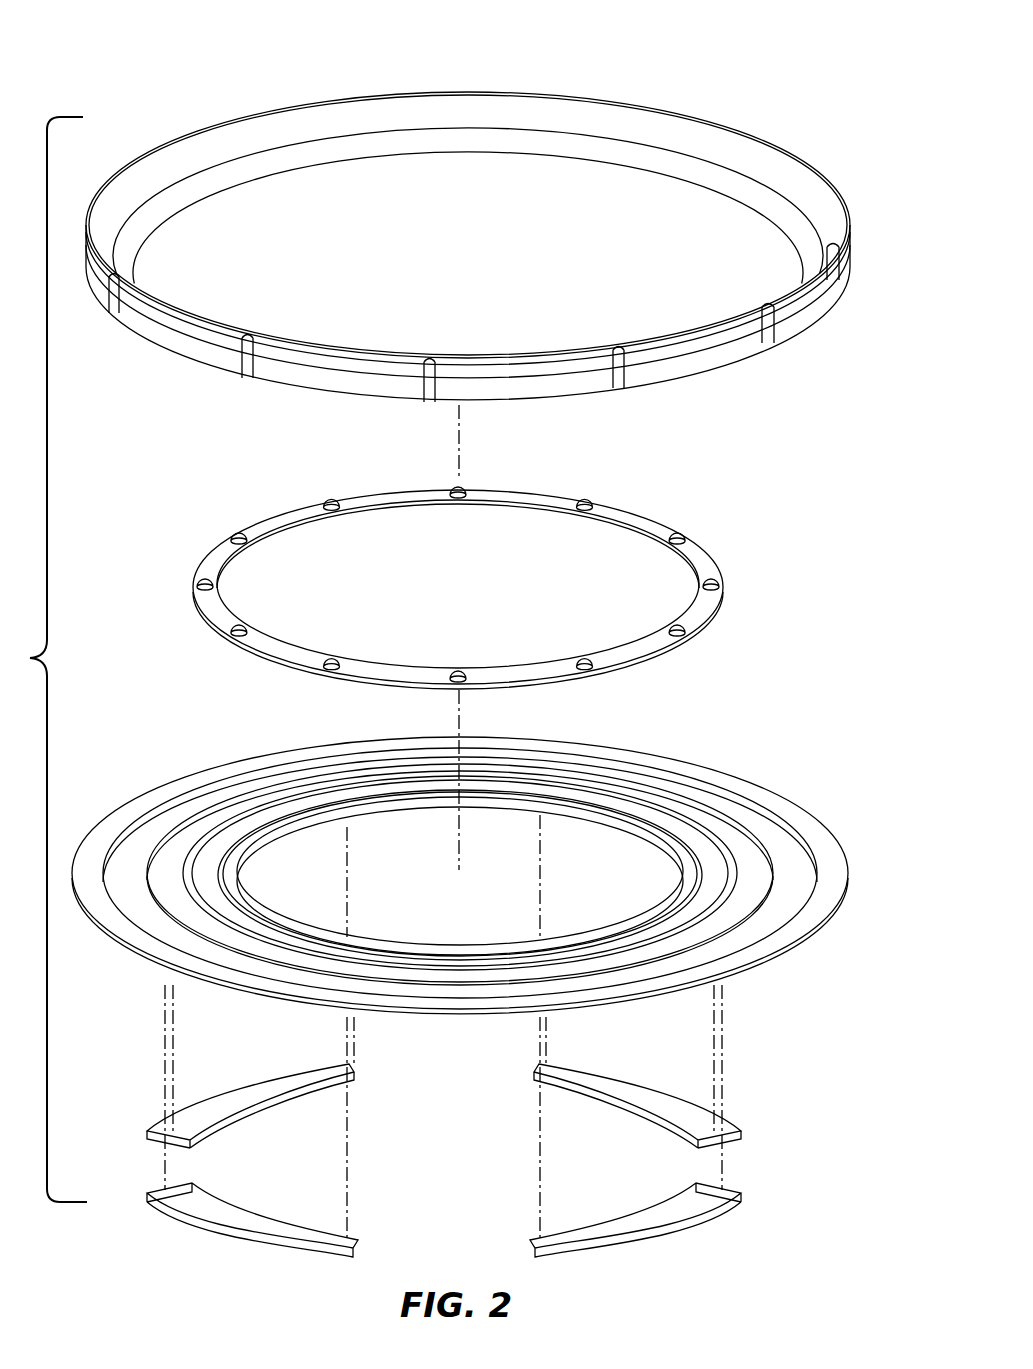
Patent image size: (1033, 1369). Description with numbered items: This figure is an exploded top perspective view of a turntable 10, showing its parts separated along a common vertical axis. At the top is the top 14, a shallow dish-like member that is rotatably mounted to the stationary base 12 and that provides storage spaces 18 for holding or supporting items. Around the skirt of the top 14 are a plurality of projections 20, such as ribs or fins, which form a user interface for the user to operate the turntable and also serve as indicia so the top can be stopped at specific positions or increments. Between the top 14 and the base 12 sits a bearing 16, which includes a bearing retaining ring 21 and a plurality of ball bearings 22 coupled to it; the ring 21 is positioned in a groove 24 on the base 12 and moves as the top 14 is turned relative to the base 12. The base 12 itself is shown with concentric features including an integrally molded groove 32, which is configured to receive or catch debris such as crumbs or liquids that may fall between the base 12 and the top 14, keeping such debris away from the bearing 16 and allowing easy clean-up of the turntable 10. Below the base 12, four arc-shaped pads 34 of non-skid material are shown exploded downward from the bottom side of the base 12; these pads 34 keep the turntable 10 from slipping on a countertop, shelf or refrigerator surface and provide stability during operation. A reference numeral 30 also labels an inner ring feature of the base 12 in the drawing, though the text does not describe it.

The turntable 10 is at (204, 54).
The stationary base 12 is at (460, 875).
The top 14 is at (392, 92).
The bearing 16 is at (490, 582).
The storage spaces 18 is at (583, 168).
The projections 20 is at (121, 292).
The bearing retaining ring 21 is at (503, 667).
The ball bearings 22 is at (246, 530).
The groove 24 is at (207, 880).
The inner ring 30 is at (680, 876).
The groove 32 is at (160, 882).
The pads 34 is at (278, 1102).